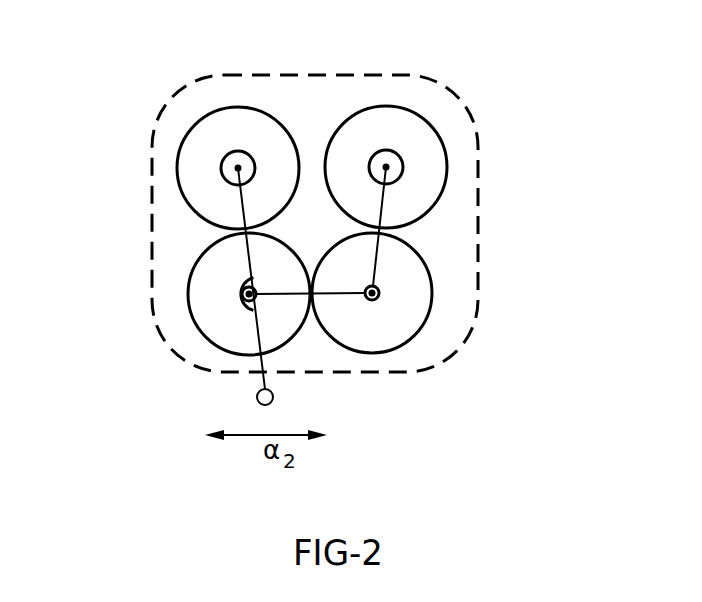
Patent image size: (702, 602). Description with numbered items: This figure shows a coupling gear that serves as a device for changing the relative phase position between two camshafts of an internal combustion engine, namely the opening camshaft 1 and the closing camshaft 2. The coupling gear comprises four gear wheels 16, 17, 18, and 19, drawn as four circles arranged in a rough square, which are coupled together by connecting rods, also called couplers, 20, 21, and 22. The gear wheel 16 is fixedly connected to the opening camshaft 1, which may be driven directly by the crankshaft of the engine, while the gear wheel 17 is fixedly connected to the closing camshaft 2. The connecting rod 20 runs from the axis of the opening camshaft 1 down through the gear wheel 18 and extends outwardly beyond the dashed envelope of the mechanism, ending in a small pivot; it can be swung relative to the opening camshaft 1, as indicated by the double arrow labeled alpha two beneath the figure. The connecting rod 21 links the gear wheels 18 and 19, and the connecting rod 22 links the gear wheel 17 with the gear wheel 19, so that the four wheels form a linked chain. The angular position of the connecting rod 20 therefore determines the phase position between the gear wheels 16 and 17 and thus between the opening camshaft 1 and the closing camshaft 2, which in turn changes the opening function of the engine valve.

The opening camshaft 1 is at (222, 167).
The closing camshaft 2 is at (402, 160).
The gear wheel 16 is at (235, 120).
The gear wheel 17 is at (392, 130).
The gear wheel 18 is at (212, 310).
The gear wheel 19 is at (422, 308).
The connecting rod 20 is at (247, 260).
The connecting rod 21 is at (342, 297).
The connecting rod 22 is at (377, 260).